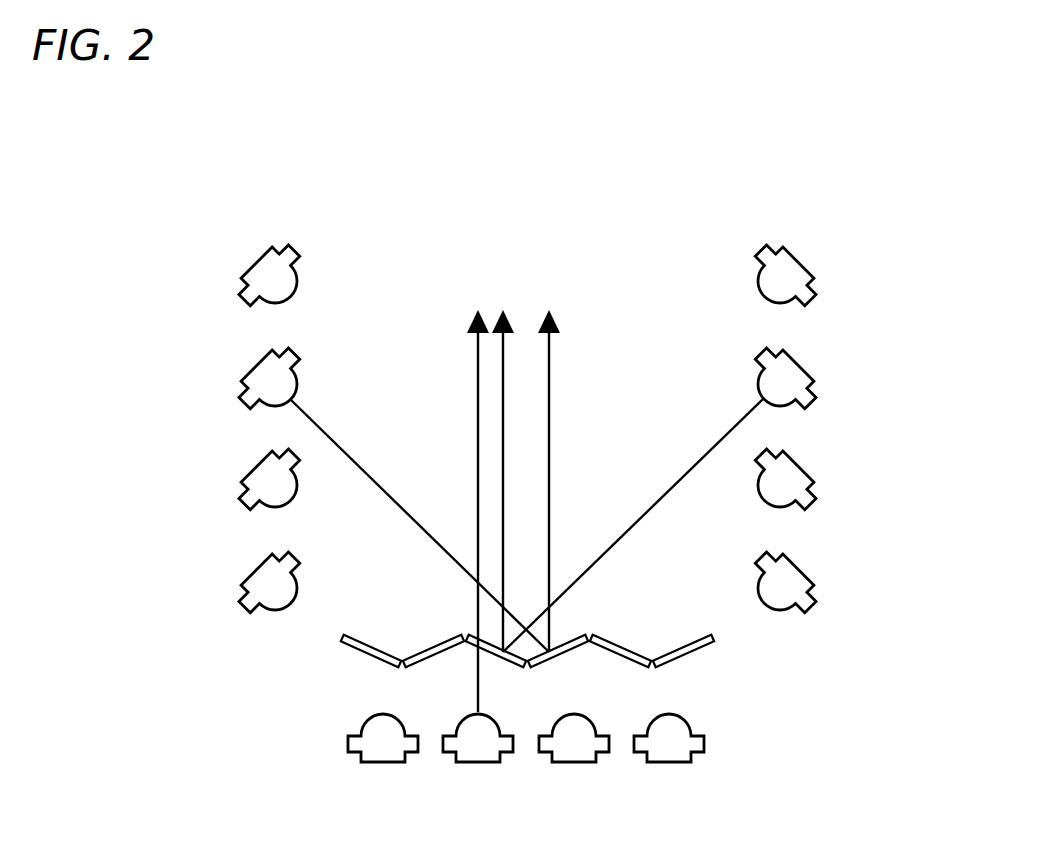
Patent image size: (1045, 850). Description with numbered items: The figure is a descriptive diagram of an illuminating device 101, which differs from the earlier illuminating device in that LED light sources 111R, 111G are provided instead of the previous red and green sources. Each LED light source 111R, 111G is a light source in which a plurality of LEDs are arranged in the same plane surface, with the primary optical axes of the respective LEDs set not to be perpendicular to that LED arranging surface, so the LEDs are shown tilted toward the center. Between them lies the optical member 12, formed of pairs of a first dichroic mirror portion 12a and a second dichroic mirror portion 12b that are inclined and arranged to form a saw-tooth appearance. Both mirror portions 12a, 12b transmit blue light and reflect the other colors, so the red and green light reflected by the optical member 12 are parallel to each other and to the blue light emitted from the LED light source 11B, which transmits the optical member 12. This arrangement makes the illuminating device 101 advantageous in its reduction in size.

The illuminating device 101 is at (235, 160).
The LED light source 111G is at (202, 433).
The LED light source 111R is at (863, 428).
The LED light source 11B is at (321, 738).
The optical member 12 is at (739, 657).
The first dichroic mirror portion 12a is at (428, 650).
The second dichroic mirror portion 12b is at (378, 650).